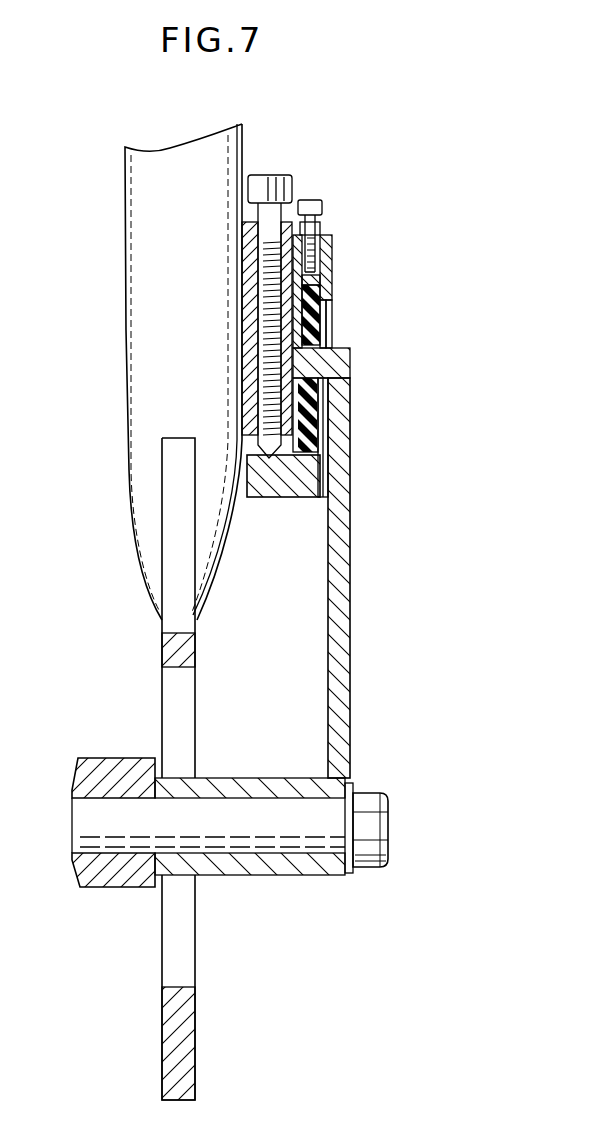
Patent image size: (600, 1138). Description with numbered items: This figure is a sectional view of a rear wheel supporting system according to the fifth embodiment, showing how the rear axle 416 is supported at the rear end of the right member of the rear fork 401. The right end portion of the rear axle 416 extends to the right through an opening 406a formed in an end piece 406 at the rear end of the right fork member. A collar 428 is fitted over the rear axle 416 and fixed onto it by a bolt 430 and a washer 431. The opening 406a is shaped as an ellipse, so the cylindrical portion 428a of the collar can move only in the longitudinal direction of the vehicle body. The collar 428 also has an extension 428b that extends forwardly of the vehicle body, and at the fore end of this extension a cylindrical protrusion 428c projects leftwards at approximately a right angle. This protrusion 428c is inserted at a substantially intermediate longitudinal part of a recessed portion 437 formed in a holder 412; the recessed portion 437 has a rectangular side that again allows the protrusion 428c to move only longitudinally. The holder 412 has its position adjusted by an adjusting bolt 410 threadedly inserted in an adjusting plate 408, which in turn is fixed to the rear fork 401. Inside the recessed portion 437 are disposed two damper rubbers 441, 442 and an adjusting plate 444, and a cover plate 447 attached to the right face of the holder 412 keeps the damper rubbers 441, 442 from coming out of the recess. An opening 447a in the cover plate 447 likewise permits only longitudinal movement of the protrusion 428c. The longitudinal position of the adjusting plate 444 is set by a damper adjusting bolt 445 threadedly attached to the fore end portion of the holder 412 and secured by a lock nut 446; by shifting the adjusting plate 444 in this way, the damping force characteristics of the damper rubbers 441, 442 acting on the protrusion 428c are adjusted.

The rear fork 401 is at (108, 379).
The end piece 406 is at (177, 562).
The opening 406a is at (182, 953).
The adjusting plate 408 is at (248, 296).
The adjusting bolt 410 is at (273, 177).
The holder 412 is at (287, 497).
The rear axle 416 is at (323, 842).
The collar 428 is at (338, 682).
The cylindrical portion 428a is at (207, 868).
The extension 428b is at (337, 470).
The cylindrical protrusion 428c is at (335, 368).
The bolt 430 is at (362, 822).
The washer 431 is at (352, 785).
The recessed portion 437 is at (315, 497).
The damper rubber 441 is at (332, 343).
The damper rubber 442 is at (312, 436).
The adjusting plate 444 is at (322, 258).
The damper adjusting bolt 445 is at (312, 203).
The lock nut 446 is at (318, 232).
The cover plate 447 is at (318, 290).
The opening 447a is at (326, 334).